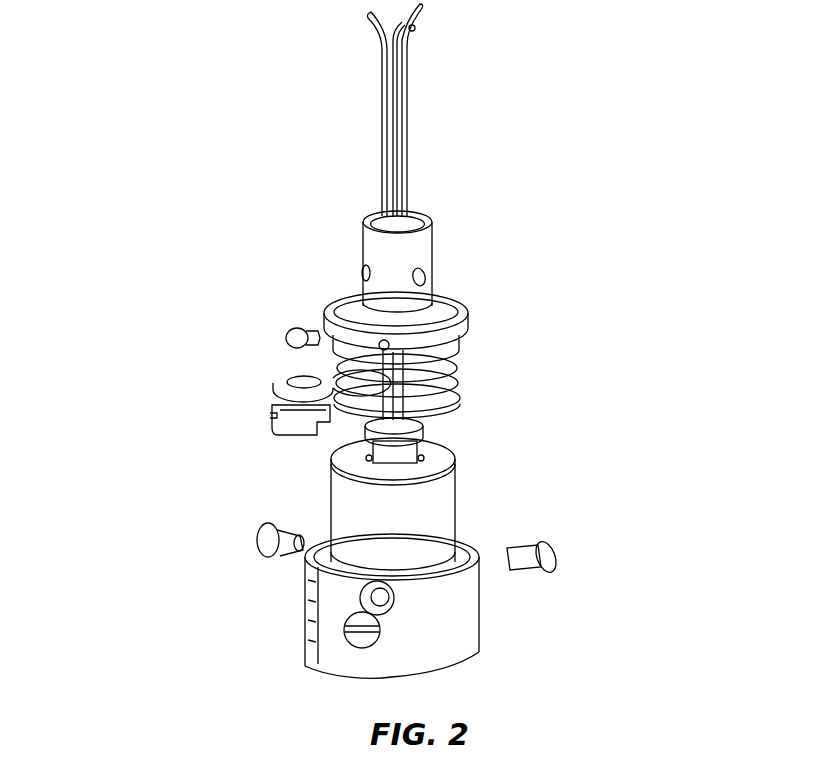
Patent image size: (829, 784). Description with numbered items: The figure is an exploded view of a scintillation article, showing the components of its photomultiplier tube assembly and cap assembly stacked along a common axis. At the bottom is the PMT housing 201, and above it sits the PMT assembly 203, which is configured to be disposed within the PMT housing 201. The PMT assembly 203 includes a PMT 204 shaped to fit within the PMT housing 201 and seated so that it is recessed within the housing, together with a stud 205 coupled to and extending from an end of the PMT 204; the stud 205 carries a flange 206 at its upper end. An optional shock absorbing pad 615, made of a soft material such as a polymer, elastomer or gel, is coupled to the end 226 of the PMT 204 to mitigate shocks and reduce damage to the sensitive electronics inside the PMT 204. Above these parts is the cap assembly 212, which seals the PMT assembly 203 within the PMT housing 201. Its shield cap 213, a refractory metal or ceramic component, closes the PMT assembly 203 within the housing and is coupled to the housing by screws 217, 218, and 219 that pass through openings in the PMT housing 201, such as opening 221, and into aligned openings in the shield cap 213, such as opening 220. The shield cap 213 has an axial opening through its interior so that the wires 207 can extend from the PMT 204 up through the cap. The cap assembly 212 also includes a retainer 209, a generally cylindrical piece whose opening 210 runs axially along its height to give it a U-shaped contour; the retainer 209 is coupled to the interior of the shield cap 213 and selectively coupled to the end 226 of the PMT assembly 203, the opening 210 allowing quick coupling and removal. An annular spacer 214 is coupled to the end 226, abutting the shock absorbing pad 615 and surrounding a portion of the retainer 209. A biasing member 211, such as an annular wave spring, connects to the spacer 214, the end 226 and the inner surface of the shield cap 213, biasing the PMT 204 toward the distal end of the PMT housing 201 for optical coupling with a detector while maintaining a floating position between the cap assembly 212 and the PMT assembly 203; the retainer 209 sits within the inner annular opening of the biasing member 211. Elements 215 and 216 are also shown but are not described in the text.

The PMT housing 201 is at (470, 618).
The PMT assembly 203 is at (495, 478).
The PMT 204 is at (453, 513).
The stud 205 is at (398, 461).
The flange 206 is at (426, 428).
The wires 207 is at (380, 36).
The retainer 209 is at (272, 383).
The opening 210 is at (316, 421).
The biasing member 211 is at (458, 353).
The cap assembly 212 is at (472, 254).
The shield cap 213 is at (460, 296).
The spacer 214 is at (455, 388).
The screw 215 is at (284, 328).
The collar 216 is at (335, 325).
The screw 217 is at (262, 548).
The screw 218 is at (360, 640).
The screw 219 is at (555, 563).
The opening 220 is at (384, 340).
The opening 221 is at (393, 603).
The end 226 is at (316, 462).
The shock absorbing pad 615 is at (362, 474).